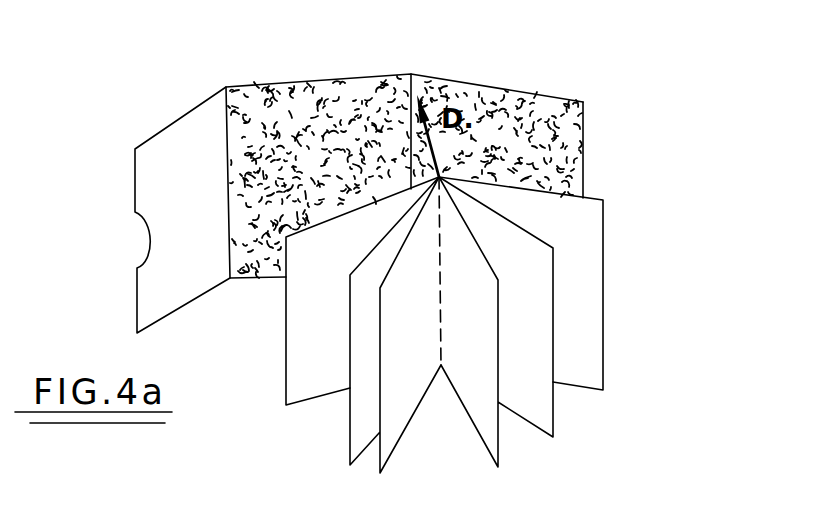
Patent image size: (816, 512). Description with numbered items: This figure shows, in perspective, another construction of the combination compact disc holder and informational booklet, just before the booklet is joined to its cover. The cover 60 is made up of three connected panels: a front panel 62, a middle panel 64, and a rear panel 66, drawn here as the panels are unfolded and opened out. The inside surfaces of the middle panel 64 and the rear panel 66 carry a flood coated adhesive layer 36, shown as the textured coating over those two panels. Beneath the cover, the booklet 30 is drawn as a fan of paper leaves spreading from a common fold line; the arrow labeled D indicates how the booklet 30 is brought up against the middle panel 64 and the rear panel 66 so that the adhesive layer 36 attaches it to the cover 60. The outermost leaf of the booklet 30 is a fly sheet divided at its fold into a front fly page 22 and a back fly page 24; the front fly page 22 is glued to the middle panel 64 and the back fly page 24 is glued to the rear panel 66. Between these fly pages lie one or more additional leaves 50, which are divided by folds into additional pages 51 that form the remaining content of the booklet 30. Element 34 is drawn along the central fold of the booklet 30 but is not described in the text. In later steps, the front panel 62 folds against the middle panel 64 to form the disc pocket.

The cover 60 is at (157, 100).
The front panel 62 is at (145, 178).
The middle panel 64 is at (340, 81).
The rear panel 66 is at (527, 103).
The flood coated adhesive layer 36 is at (555, 127).
The booklet 30 is at (605, 426).
The central axis 34 is at (443, 237).
The front fly page 22 is at (302, 363).
The back fly page 24 is at (594, 233).
The additional leaves 50 is at (342, 471).
The additional pages 51 is at (499, 344).